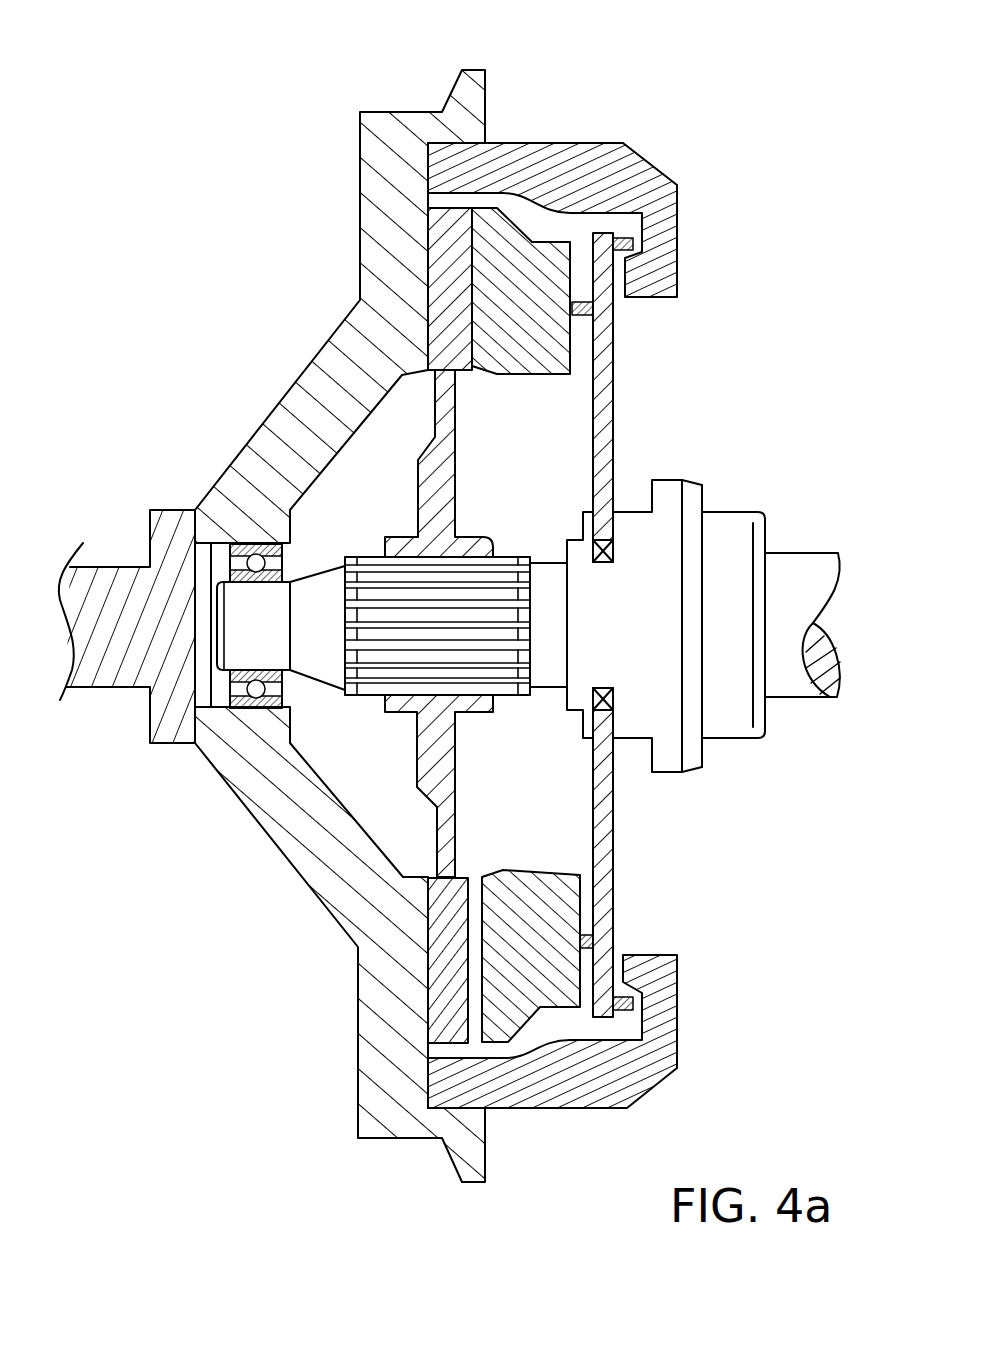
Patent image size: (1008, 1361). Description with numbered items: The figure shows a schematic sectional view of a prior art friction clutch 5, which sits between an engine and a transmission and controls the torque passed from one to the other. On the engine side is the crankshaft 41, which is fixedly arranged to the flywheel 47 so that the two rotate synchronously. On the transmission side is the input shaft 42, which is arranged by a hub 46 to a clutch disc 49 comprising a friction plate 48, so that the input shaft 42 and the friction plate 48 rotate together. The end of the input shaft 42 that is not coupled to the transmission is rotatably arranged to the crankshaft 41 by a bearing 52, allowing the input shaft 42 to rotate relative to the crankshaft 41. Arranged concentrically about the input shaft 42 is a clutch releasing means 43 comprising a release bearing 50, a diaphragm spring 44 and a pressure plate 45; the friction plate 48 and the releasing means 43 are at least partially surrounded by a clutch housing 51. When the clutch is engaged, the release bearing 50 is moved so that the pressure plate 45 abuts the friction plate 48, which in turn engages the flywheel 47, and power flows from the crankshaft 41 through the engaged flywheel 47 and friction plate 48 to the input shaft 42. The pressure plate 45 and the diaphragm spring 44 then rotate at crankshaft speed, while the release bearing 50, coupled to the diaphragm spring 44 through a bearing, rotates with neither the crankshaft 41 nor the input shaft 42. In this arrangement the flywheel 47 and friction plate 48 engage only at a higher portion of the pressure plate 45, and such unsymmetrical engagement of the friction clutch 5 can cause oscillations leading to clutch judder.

The friction clutch 5 is at (275, 51).
The crankshaft 41 is at (128, 610).
The input shaft 42 is at (790, 682).
The clutch releasing means 43 is at (776, 449).
The diaphragm spring 44 is at (607, 393).
The pressure plate 45 is at (502, 250).
The hub 46 is at (433, 638).
The flywheel 47 is at (378, 185).
The friction plate 48 is at (452, 293).
The clutch disc 49 is at (428, 492).
The release bearing 50 is at (617, 640).
The clutch housing 51 is at (622, 170).
The bearing 52 is at (228, 705).